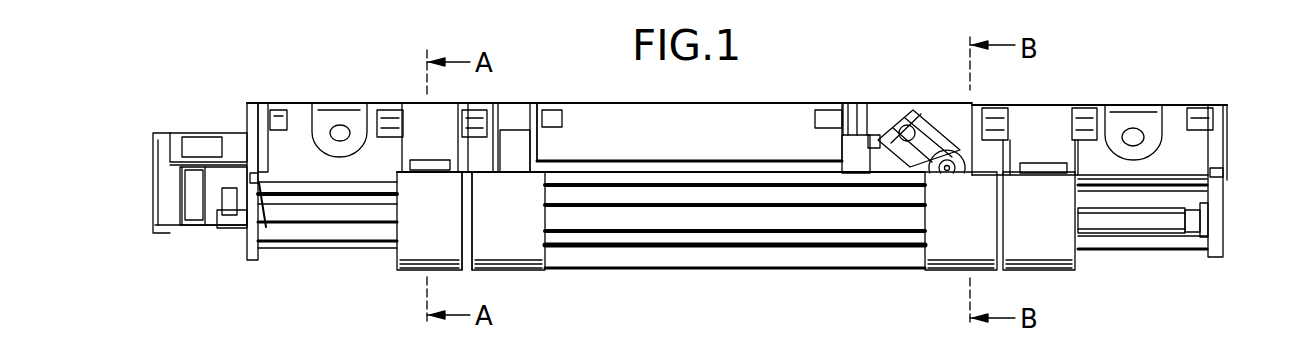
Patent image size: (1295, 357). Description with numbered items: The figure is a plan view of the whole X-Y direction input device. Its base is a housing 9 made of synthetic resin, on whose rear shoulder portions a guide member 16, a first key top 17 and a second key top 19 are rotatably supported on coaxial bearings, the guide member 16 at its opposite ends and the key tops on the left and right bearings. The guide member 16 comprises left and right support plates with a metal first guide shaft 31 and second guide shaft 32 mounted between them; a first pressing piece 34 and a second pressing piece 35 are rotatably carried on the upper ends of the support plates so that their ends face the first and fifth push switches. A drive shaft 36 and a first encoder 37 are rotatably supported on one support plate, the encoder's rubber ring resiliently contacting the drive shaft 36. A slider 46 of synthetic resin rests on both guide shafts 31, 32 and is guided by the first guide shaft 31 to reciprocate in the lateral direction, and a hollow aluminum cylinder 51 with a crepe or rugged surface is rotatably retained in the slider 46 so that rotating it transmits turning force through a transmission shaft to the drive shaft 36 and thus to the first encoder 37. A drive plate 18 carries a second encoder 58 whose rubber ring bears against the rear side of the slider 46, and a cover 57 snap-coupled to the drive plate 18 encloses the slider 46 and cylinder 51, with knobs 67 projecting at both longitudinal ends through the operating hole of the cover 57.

The housing 9 is at (786, 115).
The guide member 16 is at (247, 118).
The first key top 17 is at (450, 248).
The drive plate 18 is at (862, 147).
The second key top 19 is at (1057, 247).
The first guide shaft 31 is at (342, 198).
The second guide shaft 32 is at (380, 243).
The first pressing piece 34 is at (263, 207).
The second pressing piece 35 is at (1209, 222).
The drive shaft 36 is at (237, 228).
The first encoder 37 is at (198, 203).
The slider 46 is at (623, 240).
The cylinder 51 is at (788, 220).
The cover 57 is at (708, 268).
The second encoder 58 is at (928, 120).
The knobs 67 is at (525, 250).